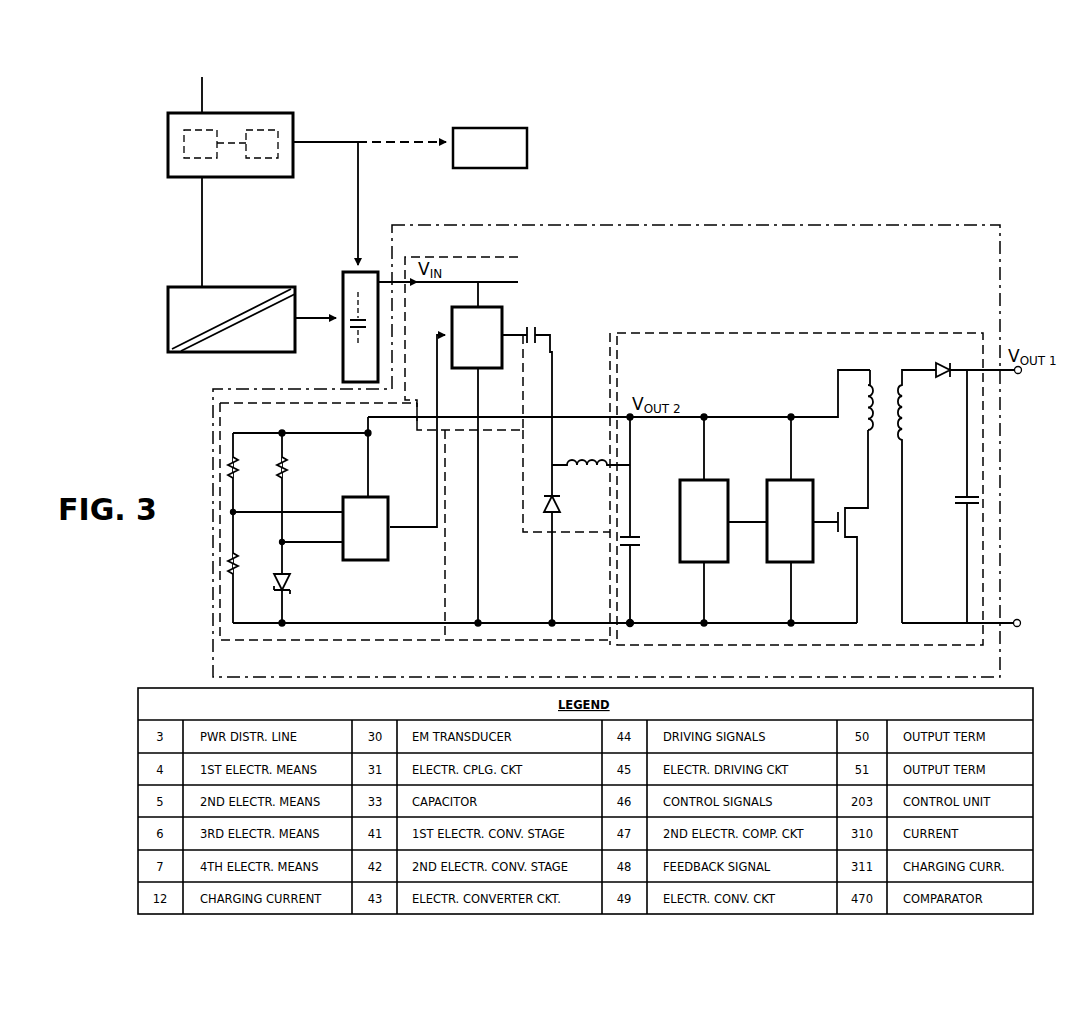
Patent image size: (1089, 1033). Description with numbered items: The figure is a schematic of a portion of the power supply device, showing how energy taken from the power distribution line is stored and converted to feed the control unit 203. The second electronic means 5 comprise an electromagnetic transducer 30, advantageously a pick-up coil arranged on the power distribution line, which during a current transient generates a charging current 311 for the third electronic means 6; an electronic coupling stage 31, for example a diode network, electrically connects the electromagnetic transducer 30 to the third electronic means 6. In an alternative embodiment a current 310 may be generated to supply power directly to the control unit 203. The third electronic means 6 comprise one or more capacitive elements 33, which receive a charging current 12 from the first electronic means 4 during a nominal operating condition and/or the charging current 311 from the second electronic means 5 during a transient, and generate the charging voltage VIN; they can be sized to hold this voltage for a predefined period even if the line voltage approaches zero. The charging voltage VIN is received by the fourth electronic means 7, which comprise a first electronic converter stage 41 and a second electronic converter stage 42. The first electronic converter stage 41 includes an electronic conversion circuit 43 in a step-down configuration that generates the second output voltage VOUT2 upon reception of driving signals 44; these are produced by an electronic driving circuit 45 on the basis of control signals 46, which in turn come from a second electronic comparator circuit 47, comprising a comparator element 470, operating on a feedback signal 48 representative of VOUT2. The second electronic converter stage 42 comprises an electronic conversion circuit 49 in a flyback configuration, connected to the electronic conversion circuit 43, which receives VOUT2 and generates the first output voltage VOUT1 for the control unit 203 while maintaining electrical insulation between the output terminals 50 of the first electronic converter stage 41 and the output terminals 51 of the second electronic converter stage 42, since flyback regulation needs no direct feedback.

The first electronic means 4 is at (178, 312).
The second electronic means 5 is at (297, 126).
The third electronic means 6 is at (360, 327).
The fourth electronic means 7 is at (524, 226).
The charging current 12 is at (314, 318).
The electromagnetic transducer 30 is at (205, 129).
The electronic coupling stage 31 is at (265, 129).
The capacitive elements 33 is at (356, 347).
The first electronic converter stage 41 is at (580, 245).
The second electronic converter stage 42 is at (773, 320).
The electronic conversion circuit 43 is at (580, 537).
The driving signals 44 is at (514, 330).
The electronic driving circuit 45 is at (488, 368).
The control signals 46 is at (438, 360).
The second electronic comparator circuit 47 is at (232, 416).
The feedback signal 48 is at (313, 438).
The electronic conversion circuit 49 is at (822, 410).
The output terminals 50 is at (636, 621).
The output terminals 51 is at (1018, 378).
The control unit 203 is at (507, 137).
The current 310 is at (402, 130).
The charging current 311 is at (363, 192).
The comparator element 470 is at (368, 545).